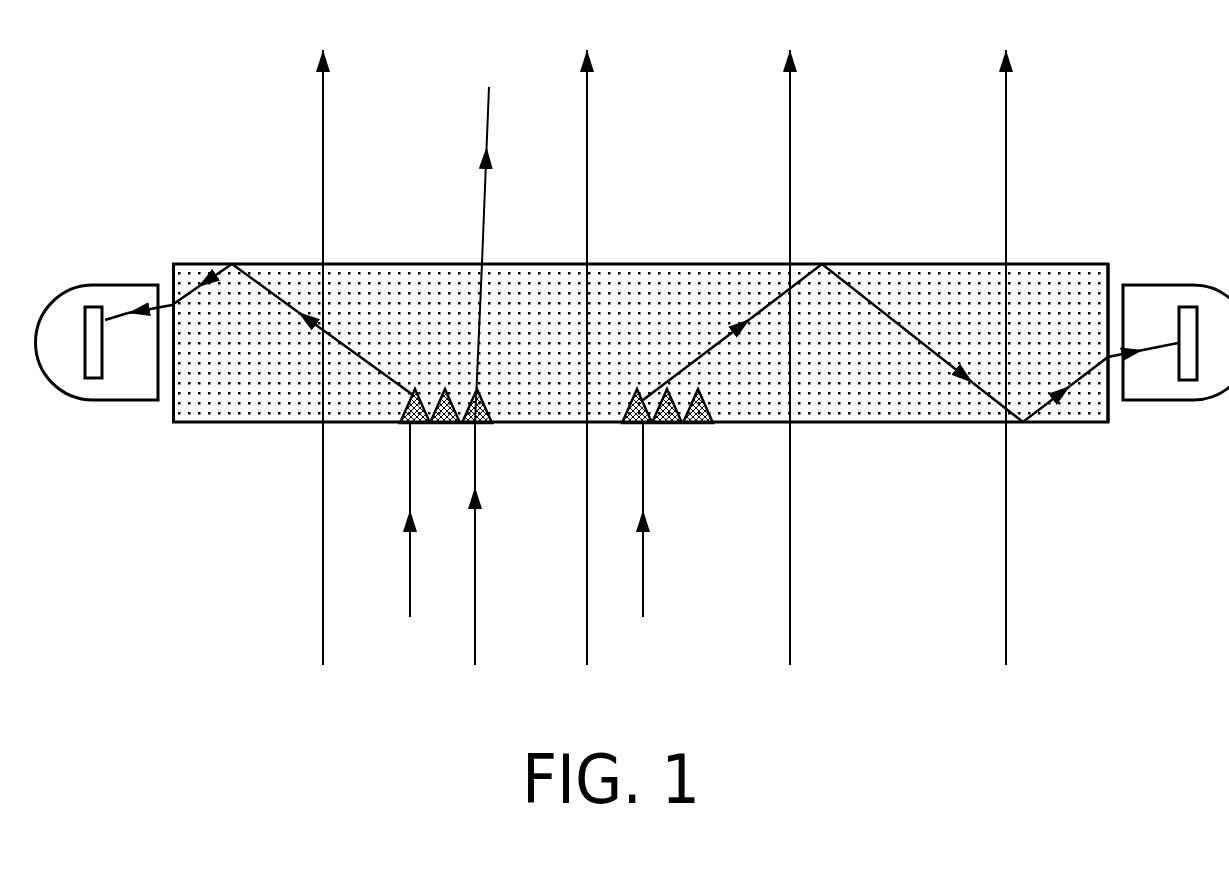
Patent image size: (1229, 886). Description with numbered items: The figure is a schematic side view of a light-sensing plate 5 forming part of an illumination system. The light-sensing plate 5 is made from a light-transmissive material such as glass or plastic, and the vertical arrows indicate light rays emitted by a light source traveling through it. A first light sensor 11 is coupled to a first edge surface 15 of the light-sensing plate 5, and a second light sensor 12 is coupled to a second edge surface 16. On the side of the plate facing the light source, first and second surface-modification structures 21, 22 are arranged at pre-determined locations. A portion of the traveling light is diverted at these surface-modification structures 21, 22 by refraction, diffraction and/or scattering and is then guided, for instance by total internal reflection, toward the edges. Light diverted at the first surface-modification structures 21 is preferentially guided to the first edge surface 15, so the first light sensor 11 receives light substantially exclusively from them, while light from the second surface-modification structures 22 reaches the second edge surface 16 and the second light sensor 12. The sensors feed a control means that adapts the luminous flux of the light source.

The light-sensing plate 5 is at (1089, 272).
The first light sensor 11 is at (1190, 381).
The second light sensor 12 is at (93, 380).
The first edge surface 15 is at (1108, 315).
The second edge surface 16 is at (174, 392).
The first surface-modification structures 21 is at (428, 368).
The second surface-modification structures 22 is at (654, 368).